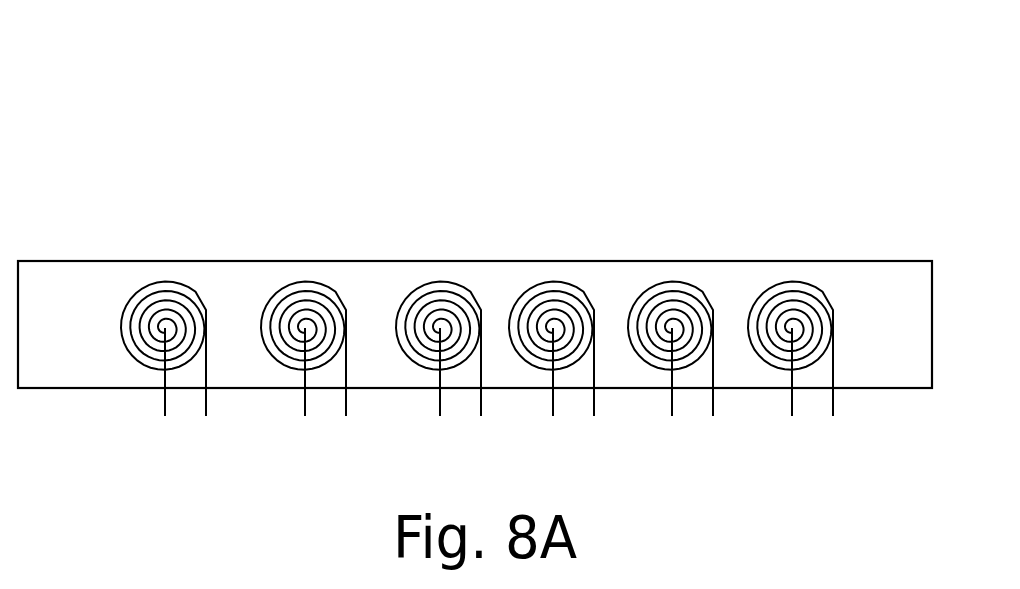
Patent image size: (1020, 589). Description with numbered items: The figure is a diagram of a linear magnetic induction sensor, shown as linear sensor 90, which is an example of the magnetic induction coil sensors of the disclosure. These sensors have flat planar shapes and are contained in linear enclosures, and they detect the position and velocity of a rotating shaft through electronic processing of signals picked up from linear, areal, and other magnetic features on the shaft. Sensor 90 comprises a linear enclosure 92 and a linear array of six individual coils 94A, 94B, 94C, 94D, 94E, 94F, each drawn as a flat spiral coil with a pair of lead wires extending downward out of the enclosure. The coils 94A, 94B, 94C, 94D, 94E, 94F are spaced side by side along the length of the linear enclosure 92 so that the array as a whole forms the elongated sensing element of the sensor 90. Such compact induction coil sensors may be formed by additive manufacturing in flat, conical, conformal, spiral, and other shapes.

The linear sensor 90 is at (789, 93).
The linear enclosure 92 is at (73, 261).
The individual coil 94A is at (166, 284).
The individual coil 94B is at (304, 284).
The individual coil 94C is at (441, 284).
The individual coil 94D is at (555, 284).
The individual coil 94E is at (673, 284).
The individual coil 94F is at (795, 284).